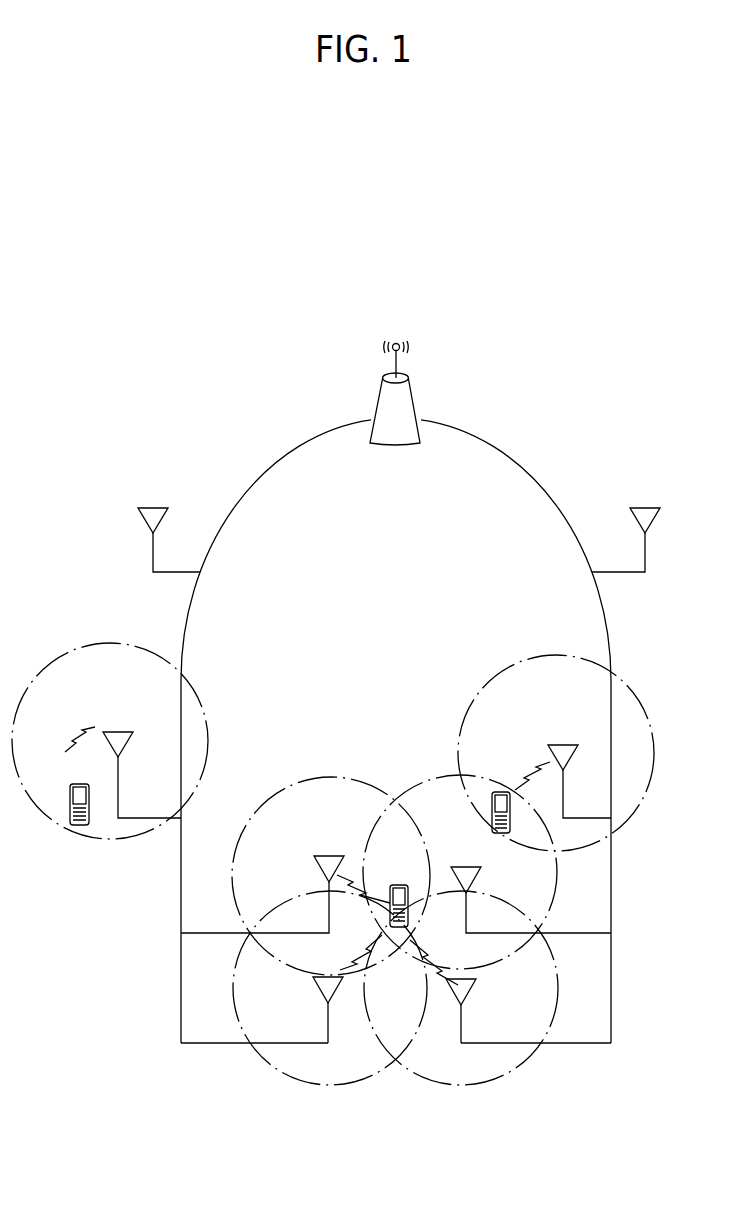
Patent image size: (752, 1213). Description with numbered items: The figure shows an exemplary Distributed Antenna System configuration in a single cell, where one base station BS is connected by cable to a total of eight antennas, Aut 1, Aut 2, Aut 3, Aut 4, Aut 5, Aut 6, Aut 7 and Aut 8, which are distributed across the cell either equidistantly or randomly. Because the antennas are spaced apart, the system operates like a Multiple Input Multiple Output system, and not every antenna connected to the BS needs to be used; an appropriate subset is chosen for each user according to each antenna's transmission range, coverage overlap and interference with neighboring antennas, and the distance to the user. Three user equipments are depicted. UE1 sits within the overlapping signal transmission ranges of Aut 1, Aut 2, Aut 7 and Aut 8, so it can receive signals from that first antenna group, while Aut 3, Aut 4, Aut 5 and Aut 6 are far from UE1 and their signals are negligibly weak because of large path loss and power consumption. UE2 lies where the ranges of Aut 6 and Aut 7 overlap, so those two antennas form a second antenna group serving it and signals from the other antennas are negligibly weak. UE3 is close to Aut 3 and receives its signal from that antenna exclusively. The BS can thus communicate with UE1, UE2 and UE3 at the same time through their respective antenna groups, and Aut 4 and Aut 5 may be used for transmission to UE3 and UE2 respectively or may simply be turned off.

The base station BS is at (395, 393).
The antenna 1 Aut 1 is at (330, 988).
The antenna 2 Aut 2 is at (305, 876).
The antenna 3 Aut 3 is at (110, 741).
The antenna 4 Aut 4 is at (150, 540).
The antenna 5 Aut 5 is at (646, 540).
The antenna 6 Aut 6 is at (556, 753).
The antenna 7 Aut 7 is at (487, 872).
The antenna 8 Aut 8 is at (461, 988).
The UE 1 UE1 is at (397, 930).
The UE 2 UE2 is at (525, 804).
The UE 3 UE3 is at (80, 790).